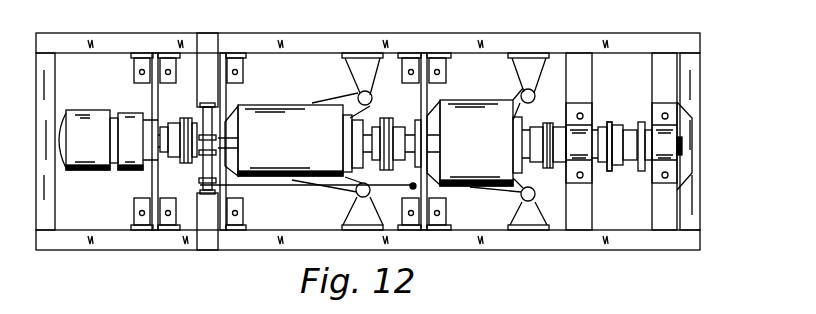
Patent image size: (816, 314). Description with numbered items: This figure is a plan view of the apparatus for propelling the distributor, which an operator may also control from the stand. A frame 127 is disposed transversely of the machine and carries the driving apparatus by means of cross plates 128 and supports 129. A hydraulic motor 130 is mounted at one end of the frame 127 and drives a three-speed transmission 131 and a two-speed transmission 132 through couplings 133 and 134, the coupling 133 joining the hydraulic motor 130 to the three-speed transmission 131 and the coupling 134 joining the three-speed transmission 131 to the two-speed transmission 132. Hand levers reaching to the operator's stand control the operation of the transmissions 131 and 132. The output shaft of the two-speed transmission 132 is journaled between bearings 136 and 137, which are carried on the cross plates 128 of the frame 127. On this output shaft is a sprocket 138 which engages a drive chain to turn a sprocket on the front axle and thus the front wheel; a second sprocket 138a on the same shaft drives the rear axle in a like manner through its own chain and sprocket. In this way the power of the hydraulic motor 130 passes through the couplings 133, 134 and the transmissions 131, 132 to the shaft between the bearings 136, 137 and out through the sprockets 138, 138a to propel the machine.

The frame 127 is at (463, 45).
The cross plates 128 is at (153, 91).
The supports 129 is at (357, 63).
The hydraulic motor 130 is at (98, 174).
The three-speed transmission 131 is at (293, 180).
The two-speed transmission 132 is at (490, 187).
The coupling 133 is at (193, 120).
The coupling 134 is at (388, 120).
The bearing 136 is at (572, 131).
The bearing 137 is at (679, 159).
The sprocket 138 is at (643, 122).
The sprocket 138a is at (609, 171).